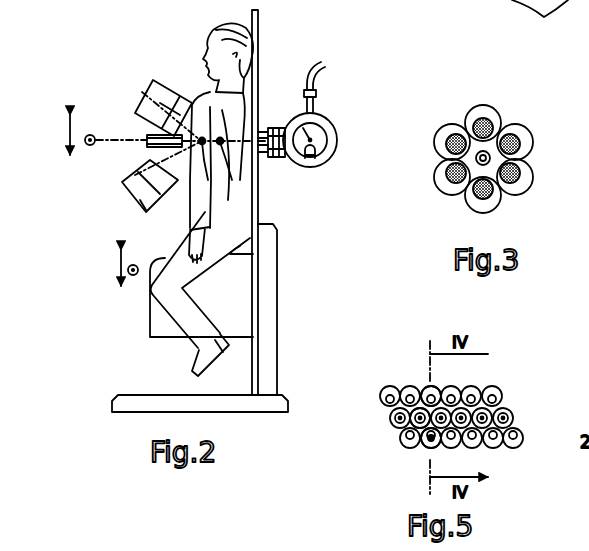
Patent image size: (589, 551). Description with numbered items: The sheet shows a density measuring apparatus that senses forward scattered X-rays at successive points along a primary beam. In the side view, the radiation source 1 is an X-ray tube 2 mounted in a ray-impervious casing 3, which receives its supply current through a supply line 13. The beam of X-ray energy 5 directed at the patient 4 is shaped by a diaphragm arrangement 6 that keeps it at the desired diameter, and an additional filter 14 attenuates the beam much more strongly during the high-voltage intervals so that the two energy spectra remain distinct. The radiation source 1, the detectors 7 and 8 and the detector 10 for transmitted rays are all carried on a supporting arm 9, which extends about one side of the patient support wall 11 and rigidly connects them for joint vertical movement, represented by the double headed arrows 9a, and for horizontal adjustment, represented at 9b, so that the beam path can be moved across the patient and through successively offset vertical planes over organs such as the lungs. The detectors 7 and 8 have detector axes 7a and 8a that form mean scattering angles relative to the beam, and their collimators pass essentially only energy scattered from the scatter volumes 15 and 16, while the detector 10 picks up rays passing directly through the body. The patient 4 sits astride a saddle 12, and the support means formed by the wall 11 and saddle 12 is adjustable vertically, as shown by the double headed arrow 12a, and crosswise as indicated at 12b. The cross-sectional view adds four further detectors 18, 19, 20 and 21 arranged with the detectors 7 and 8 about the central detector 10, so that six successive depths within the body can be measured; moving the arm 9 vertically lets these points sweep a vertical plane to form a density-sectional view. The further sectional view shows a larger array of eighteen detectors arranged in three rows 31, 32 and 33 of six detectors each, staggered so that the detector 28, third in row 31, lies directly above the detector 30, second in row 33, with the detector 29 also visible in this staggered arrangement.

In FIG. 2, the radiation source 1 is at (336, 128).
In FIG. 2, the X-ray tube 2 is at (327, 147).
In FIG. 2, the casing 3 is at (325, 165).
In FIG. 2, the patient 4 is at (240, 208).
In FIG. 2, the beam of X-ray energy 5 is at (255, 150).
In FIG. 2, the diaphragm arrangement 6 is at (283, 158).
In FIG. 2, the detector 7 is at (155, 90).
In FIG. 3, the detector 7 is at (487, 113).
In FIG. 2, the detector axis 7a is at (170, 100).
In FIG. 2, the detector 8 is at (138, 177).
In FIG. 3, the detector 8 is at (493, 207).
In FIG. 2, the detector axis 8a is at (137, 205).
In FIG. 2, the supporting arm 9 is at (258, 101).
In FIG. 2, the double headed arrows 9a is at (68, 138).
In FIG. 2, the horizontal adjustment 9b is at (92, 133).
In FIG. 2, the detector for transmitted rays 10 is at (147, 136).
In FIG. 3, the detector for transmitted rays 10 is at (476, 156).
In FIG. 2, the patient support wall 11 is at (259, 28).
In FIG. 2, the saddle 12 is at (158, 317).
In FIG. 2, the double headed arrow 12a is at (113, 272).
In FIG. 2, the horizontal adjustment 12b is at (133, 265).
In FIG. 2, the supply line 13 is at (334, 87).
In FIG. 2, the filter 14 is at (269, 128).
In FIG. 2, the scatter volume 15 is at (203, 122).
In FIG. 2, the scatter volume 16 is at (188, 187).
In FIG. 3, the detector 18 is at (442, 130).
In FIG. 3, the detector 19 is at (437, 185).
In FIG. 3, the detector 20 is at (528, 185).
In FIG. 3, the detector 21 is at (523, 135).
In FIG. 5, the detector 28 is at (430, 390).
In FIG. 5, the detector 29 is at (415, 412).
In FIG. 5, the detector 30 is at (428, 446).
In FIG. 5, the row 31 is at (380, 397).
In FIG. 5, the row 32 is at (390, 419).
In FIG. 5, the row 33 is at (402, 441).